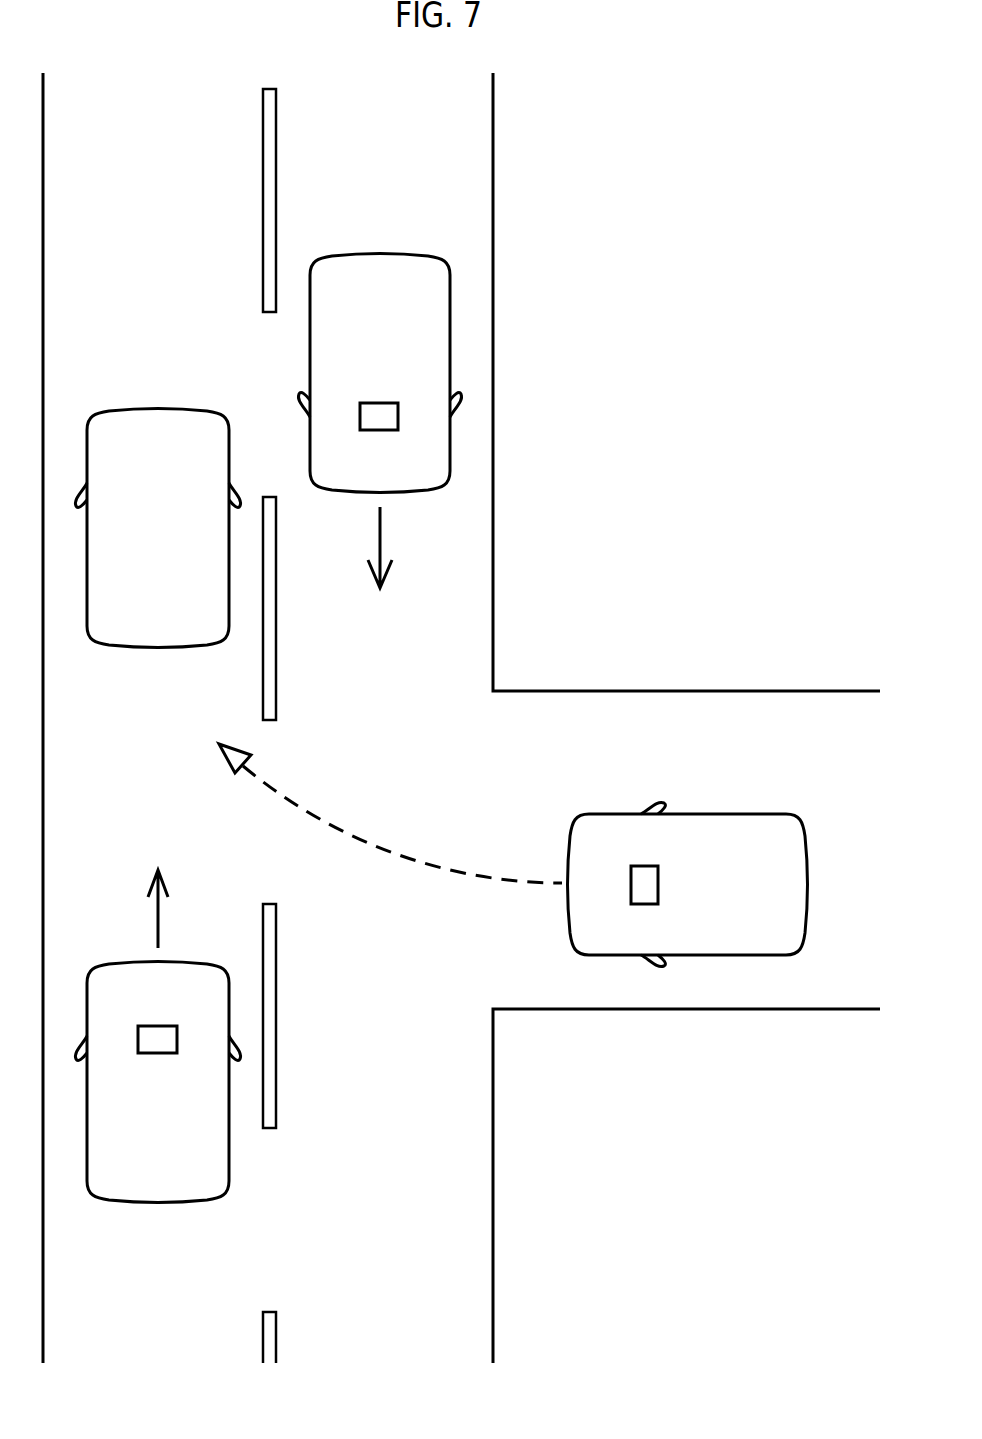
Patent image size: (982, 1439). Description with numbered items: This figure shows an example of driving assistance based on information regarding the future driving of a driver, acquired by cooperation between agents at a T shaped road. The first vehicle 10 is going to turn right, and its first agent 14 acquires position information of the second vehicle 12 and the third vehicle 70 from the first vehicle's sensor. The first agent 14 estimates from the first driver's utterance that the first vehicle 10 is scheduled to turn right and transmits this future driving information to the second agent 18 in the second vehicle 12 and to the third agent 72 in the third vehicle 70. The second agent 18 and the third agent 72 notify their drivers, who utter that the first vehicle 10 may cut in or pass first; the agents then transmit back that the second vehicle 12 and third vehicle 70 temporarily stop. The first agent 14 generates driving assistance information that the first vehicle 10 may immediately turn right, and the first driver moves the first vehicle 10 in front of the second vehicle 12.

The first vehicle 10 is at (737, 813).
The second vehicle 12 is at (208, 1165).
The first agent 14 is at (660, 877).
The second agent 18 is at (156, 1055).
The third vehicle 70 is at (391, 253).
The third agent 72 is at (387, 403).